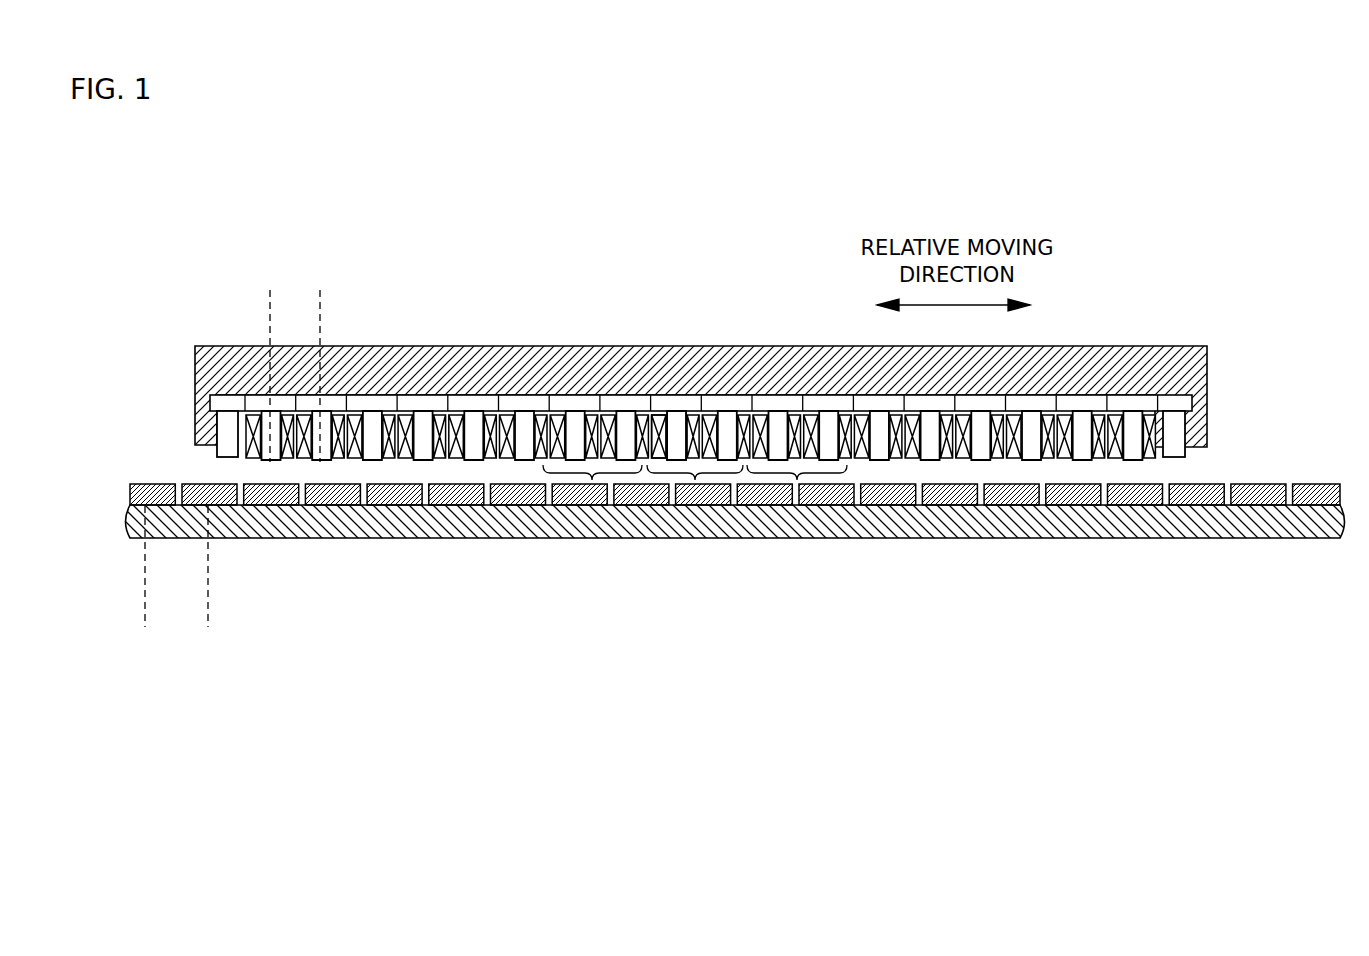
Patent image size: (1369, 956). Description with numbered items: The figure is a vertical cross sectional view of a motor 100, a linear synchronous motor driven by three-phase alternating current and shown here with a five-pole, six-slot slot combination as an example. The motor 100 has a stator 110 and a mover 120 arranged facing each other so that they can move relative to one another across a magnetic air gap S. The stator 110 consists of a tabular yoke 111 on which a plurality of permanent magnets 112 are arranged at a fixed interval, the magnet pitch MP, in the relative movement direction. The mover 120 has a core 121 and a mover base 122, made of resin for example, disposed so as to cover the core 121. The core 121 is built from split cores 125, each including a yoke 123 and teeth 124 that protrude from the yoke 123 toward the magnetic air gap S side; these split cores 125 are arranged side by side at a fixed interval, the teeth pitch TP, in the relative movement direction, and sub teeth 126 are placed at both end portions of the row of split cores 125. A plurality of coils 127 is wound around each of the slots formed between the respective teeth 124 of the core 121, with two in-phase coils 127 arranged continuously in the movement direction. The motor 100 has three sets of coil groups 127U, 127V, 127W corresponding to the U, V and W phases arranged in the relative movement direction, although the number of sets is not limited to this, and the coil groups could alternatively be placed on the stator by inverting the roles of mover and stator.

The motor 100 is at (1161, 233).
The stator 110 is at (555, 620).
The yoke 111 is at (548, 538).
The permanent magnets 112 is at (457, 497).
The mover 120 is at (347, 260).
The core 121 is at (424, 394).
The mover base 122 is at (381, 397).
The yoke 123 is at (667, 402).
The teeth 124 is at (673, 427).
The split cores 125 is at (725, 260).
The sub teeth 126 is at (223, 402).
The coils 127 is at (1150, 412).
The coil group 127U is at (592, 480).
The coil group 127V is at (695, 480).
The coil group 127W is at (797, 480).
The magnetic air gap S is at (232, 477).
The teeth pitch TP is at (270, 280).
The magnet pitch MP is at (145, 613).